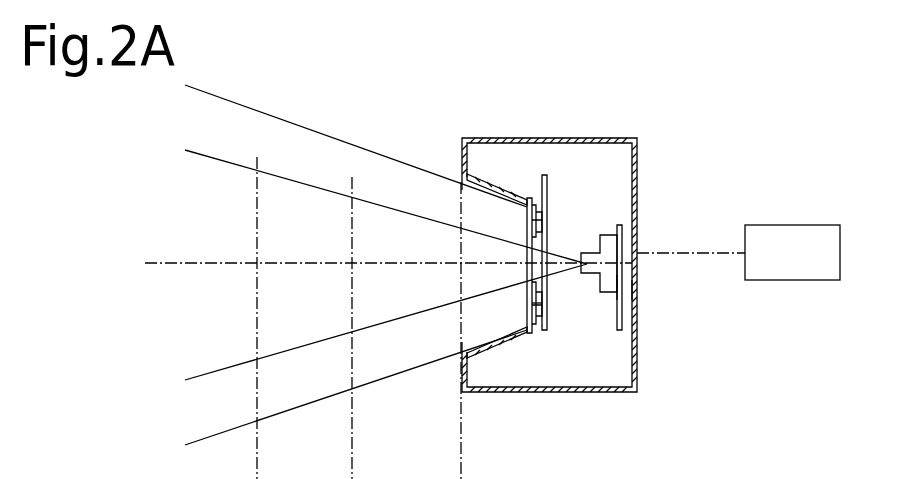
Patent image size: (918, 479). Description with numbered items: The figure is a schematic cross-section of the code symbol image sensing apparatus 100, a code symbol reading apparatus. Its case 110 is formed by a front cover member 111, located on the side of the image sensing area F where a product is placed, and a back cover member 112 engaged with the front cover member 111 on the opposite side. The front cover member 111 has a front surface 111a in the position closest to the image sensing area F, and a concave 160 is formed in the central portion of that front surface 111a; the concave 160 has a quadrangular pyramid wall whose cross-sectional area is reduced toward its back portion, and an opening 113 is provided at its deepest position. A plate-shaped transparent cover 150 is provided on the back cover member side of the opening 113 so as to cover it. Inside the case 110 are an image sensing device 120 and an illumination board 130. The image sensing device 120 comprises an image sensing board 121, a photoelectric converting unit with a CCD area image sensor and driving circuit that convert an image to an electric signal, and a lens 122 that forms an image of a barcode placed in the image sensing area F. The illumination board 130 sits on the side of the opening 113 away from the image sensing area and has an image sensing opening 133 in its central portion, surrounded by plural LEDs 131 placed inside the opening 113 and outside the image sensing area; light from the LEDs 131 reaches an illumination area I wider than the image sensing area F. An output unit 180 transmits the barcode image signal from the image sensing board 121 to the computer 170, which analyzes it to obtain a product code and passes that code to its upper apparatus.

The code symbol image sensing apparatus 100 is at (555, 213).
The case 110 is at (544, 213).
The front cover member 111 is at (488, 140).
The front surface 111a is at (465, 152).
The back cover member 112 is at (635, 288).
The opening 113 is at (530, 192).
The image sensing device 120 is at (651, 264).
The image sensing board 121 is at (622, 250).
The lens 122 is at (624, 285).
The illumination board 130 is at (519, 280).
The LEDs 131 is at (533, 340).
The image sensing opening 133 is at (548, 272).
The transparent cover 150 is at (527, 303).
The concave 160 is at (458, 198).
The computer 170 is at (792, 282).
The output unit 180 is at (607, 295).
The illumination area I is at (244, 105).
The image sensing area F is at (306, 180).